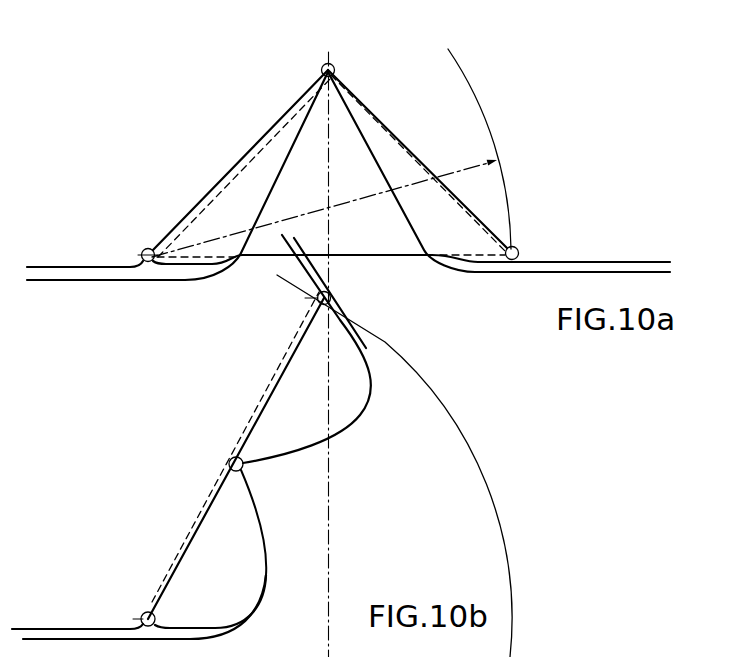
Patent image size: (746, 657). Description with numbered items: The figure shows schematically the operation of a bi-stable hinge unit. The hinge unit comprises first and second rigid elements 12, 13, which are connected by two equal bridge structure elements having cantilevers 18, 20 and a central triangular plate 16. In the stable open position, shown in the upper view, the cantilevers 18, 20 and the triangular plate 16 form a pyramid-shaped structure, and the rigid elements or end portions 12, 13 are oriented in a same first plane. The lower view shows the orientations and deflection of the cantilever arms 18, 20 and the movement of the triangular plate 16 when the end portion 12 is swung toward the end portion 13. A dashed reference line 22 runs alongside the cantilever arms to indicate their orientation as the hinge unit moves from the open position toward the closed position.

In FIG. 10A, the first rigid element 12 is at (488, 273).
In FIG. 10B, the first rigid element 12 is at (355, 321).
In FIG. 10A, the second rigid element 13 is at (67, 277).
In FIG. 10B, the second rigid element 13 is at (63, 635).
In FIG. 10A, the central triangular plate 16 is at (326, 201).
In FIG. 10A, the cantilever 18 is at (192, 223).
In FIG. 10A, the cantilever 20 is at (460, 232).
In FIG. 10A, the link member 22 is at (408, 158).
In FIG. 10B, the link member 22 is at (252, 411).